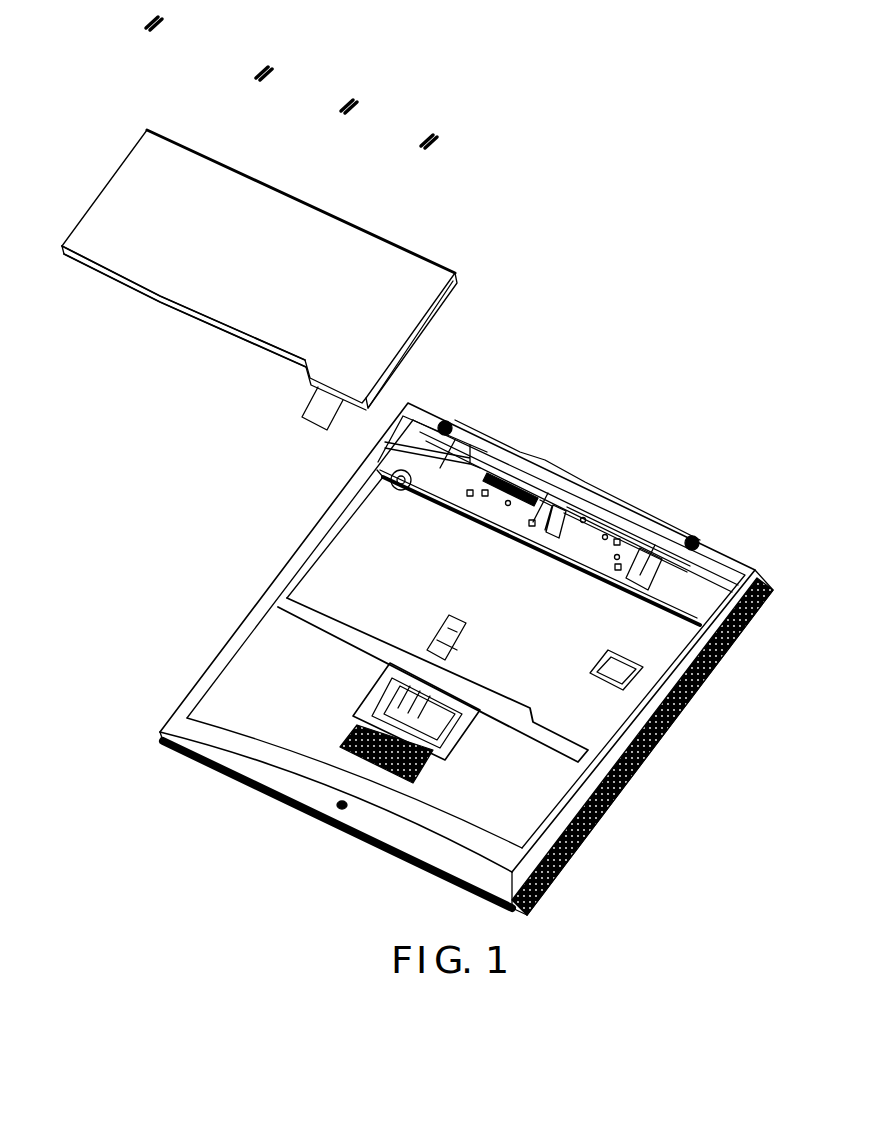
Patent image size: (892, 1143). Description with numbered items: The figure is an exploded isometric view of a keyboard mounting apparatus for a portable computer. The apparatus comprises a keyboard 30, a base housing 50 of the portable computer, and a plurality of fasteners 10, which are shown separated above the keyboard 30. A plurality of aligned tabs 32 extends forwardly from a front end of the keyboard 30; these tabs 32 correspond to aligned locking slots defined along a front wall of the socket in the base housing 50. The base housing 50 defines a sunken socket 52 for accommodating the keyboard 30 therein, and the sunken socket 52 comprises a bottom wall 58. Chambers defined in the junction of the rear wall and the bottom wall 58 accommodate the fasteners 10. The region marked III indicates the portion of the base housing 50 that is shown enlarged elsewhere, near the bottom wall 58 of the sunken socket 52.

The fasteners 10 is at (276, 60).
The keyboard 30 is at (318, 182).
The tabs 32 is at (153, 293).
The base housing 50 is at (662, 492).
The sunken socket 52 is at (330, 594).
The bottom wall 58 is at (367, 525).
The detail region III is at (396, 493).